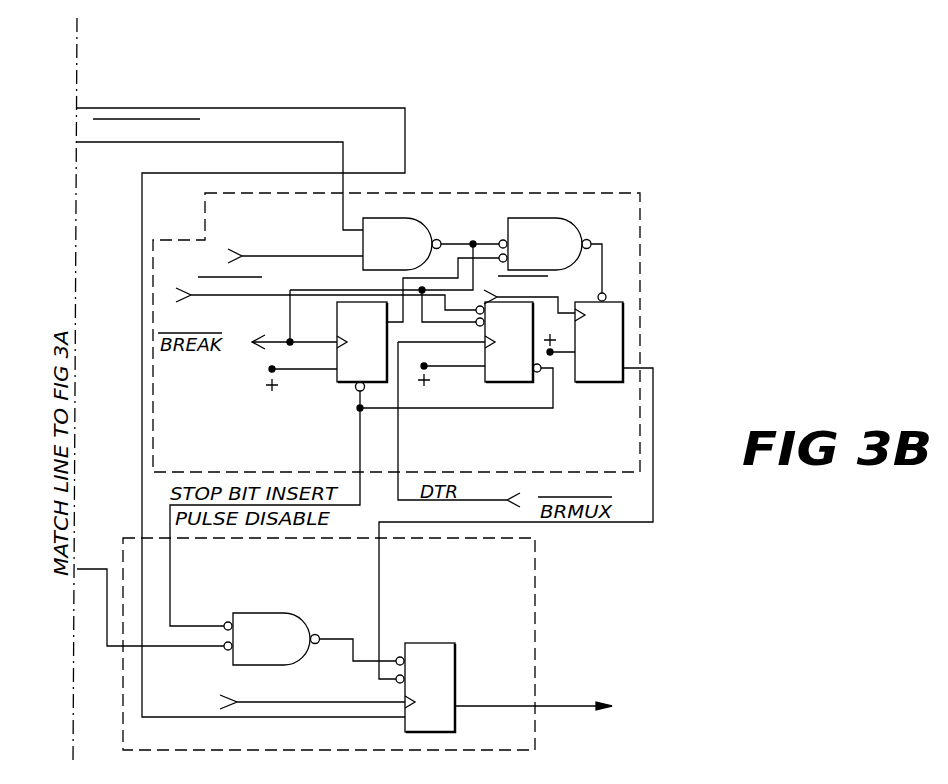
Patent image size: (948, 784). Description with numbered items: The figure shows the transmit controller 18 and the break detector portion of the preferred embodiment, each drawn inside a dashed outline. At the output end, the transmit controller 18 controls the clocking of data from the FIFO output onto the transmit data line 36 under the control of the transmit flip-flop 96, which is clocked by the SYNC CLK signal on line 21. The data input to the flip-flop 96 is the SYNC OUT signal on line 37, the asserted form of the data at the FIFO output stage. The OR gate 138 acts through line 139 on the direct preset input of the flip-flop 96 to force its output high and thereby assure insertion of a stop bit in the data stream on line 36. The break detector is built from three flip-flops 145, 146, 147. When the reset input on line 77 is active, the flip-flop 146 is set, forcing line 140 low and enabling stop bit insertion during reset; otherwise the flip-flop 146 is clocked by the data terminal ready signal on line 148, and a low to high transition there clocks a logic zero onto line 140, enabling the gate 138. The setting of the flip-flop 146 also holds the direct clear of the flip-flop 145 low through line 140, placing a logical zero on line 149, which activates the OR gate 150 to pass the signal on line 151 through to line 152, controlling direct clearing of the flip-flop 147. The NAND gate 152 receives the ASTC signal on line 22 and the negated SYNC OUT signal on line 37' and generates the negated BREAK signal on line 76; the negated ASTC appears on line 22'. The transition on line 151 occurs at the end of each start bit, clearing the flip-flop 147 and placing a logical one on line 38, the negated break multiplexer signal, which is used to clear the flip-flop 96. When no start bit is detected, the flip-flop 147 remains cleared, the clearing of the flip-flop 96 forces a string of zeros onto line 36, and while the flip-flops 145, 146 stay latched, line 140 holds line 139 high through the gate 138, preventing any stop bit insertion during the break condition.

The SYNC OUT line 37 is at (241, 395).
The negated SYNC OUT line 37' is at (220, 174).
The NAND gate / output line of gate 150 152 is at (392, 218).
The line to gate 150 and flip-flop 145 clock 151 is at (450, 244).
The OR gate 150 is at (537, 218).
The ASTC line 22 is at (295, 257).
The negated ASTC line 22' is at (540, 294).
The flip-flop 145 output line 149 is at (403, 282).
The reset input line 77 is at (221, 296).
The negated BREAK line 76 is at (265, 329).
The flip-flop 145 is at (337, 382).
The flip-flop 146 is at (492, 383).
The flip-flop 147 is at (590, 383).
The data terminal ready line 148 is at (398, 440).
The STOP BIT INSERT PULSE DISABLE line 140 is at (170, 566).
The negated break multiplexer line 38 is at (379, 560).
The OR gate 138 is at (255, 613).
The gate 138 output line 139 is at (353, 642).
The transmit flip-flop 96 is at (415, 643).
The SYNC CLK line 21 is at (232, 704).
The transmit controller 18 is at (123, 720).
The transmit data line 36 is at (572, 707).